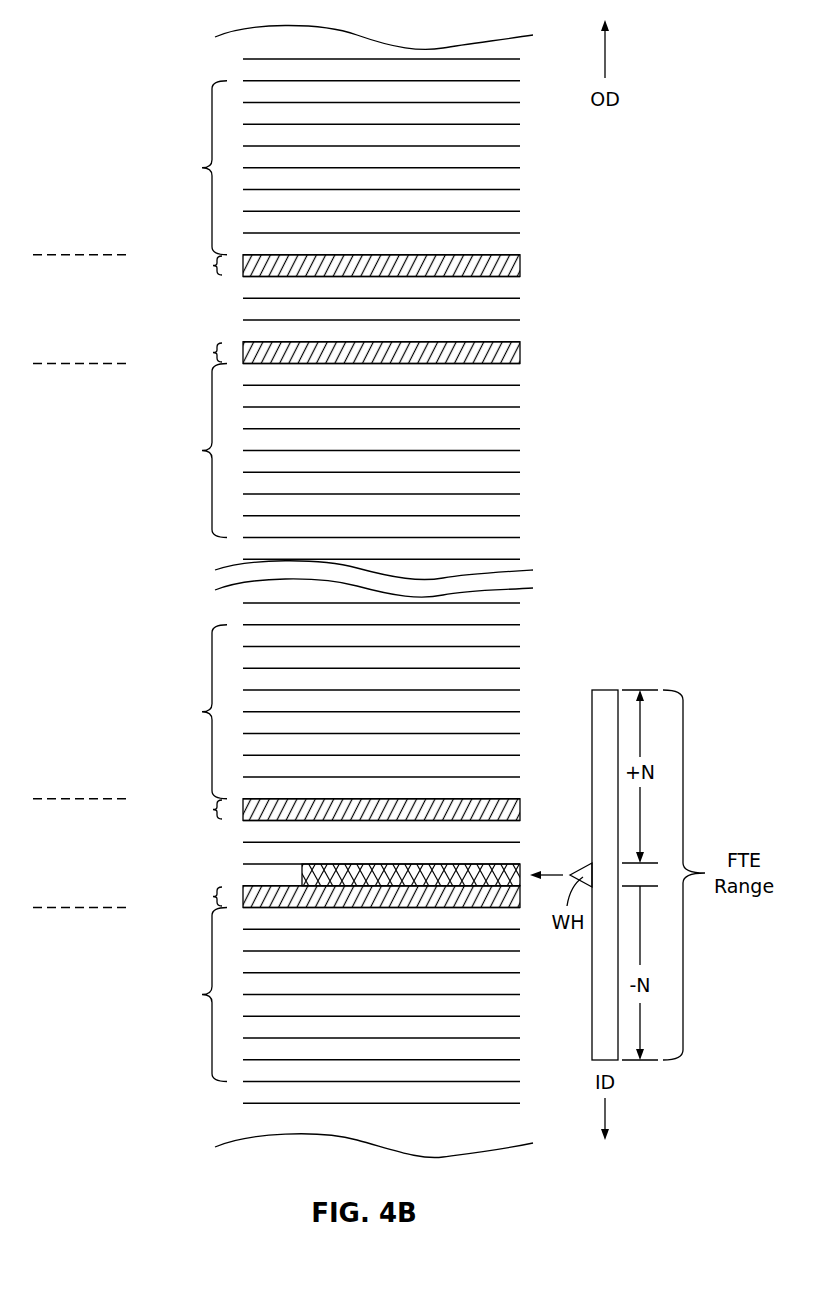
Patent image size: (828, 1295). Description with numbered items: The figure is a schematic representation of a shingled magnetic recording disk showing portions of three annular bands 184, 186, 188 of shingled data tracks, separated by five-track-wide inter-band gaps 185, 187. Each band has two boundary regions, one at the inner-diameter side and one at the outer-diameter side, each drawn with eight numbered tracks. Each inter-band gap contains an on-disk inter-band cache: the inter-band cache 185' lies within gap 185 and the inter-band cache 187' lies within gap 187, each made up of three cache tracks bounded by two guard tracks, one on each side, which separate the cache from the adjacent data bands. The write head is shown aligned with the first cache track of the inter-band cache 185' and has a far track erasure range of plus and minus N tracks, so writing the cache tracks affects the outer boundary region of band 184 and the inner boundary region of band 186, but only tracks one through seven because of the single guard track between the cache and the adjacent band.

The annular band 188 is at (90, 62).
The inter-band gap 187 is at (276, 309).
The inter-band cache 187' is at (351, 309).
The annular band 186 is at (90, 365).
The inter-band gap 185 is at (276, 853).
The inter-band cache 185' is at (351, 853).
The annular band 184 is at (90, 910).